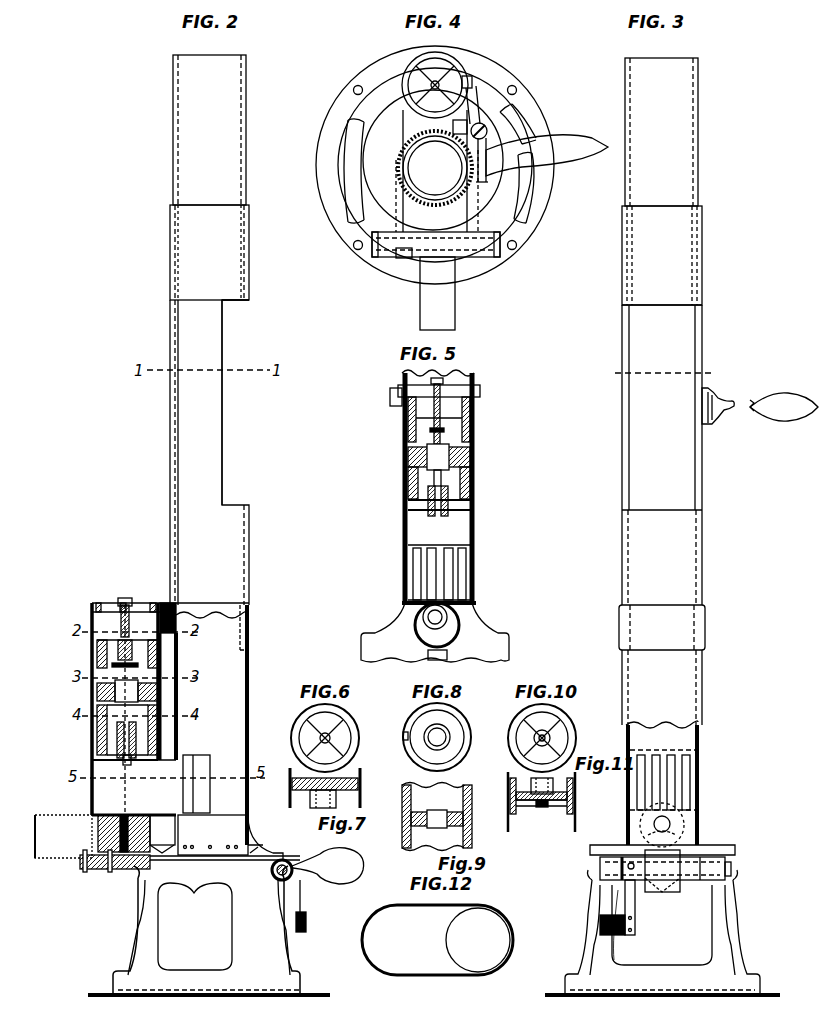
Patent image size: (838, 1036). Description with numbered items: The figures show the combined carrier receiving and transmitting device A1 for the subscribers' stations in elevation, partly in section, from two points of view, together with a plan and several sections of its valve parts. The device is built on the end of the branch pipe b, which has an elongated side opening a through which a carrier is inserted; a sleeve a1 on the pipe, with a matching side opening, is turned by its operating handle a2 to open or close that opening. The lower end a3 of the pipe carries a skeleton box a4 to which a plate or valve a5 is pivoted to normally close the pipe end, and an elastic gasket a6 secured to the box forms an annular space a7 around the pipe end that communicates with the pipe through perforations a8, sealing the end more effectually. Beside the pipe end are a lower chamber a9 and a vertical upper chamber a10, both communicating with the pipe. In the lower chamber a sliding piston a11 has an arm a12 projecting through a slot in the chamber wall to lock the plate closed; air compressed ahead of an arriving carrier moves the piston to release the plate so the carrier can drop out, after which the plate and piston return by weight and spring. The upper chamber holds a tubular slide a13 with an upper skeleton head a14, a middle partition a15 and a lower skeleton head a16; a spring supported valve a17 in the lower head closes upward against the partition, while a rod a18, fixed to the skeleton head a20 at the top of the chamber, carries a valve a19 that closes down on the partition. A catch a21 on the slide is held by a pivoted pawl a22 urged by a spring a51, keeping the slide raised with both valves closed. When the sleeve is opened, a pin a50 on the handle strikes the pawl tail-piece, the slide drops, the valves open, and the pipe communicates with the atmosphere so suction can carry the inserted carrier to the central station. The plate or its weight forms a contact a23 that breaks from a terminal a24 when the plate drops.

In FIG. 2, the elongated side opening a is at (233, 402).
In FIG. 4, the elongated side opening a is at (415, 203).
In FIG. 3, the elongated side opening a is at (663, 515).
In FIG. 2, the sleeve a1 is at (250, 300).
In FIG. 4, the sleeve a1 is at (392, 143).
In FIG. 3, the sleeve a1 is at (664, 302).
In FIG. 4, the operating handle a2 is at (572, 162).
In FIG. 3, the operating handle a2 is at (760, 394).
In FIG. 2, the lower end of pipe a3 is at (195, 845).
In FIG. 2, the skeleton box a4 is at (209, 930).
In FIG. 3, the skeleton box a4 is at (662, 932).
In FIG. 2, the plate or valve a5 is at (227, 862).
In FIG. 4, the plate or valve a5 is at (470, 262).
In FIG. 3, the plate or valve a5 is at (712, 865).
In FIG. 2, the gasket a6 is at (164, 862).
In FIG. 2, the annular space a7 is at (258, 835).
In FIG. 2, the perforations a8 is at (205, 784).
In FIG. 2, the lower chamber a9 is at (162, 834).
In FIG. 5, the lower chamber a9 is at (452, 628).
In FIG. 3, the lower chamber a9 is at (662, 825).
In FIG. 2, the upper chamber a10 is at (92, 618).
In FIG. 5, the upper chamber a10 is at (439, 488).
In FIG. 12, the upper chamber a10 is at (437, 940).
In FIG. 3, the upper chamber a10 is at (675, 790).
In FIG. 2, the sliding piston a11 is at (92, 836).
In FIG. 2, the arm a12 is at (108, 870).
In FIG. 2, the tubular slide a13 is at (91, 738).
In FIG. 4, the tubular slide a13 is at (445, 62).
In FIG. 5, the tubular slide a13 is at (460, 458).
In FIG. 6, the tubular slide a13 is at (298, 724).
In FIG. 9, the tubular slide a13 is at (418, 845).
In FIG. 2, the upper skeleton head a14 is at (88, 640).
In FIG. 6, the upper skeleton head a14 is at (330, 727).
In FIG. 7, the upper skeleton head a14 is at (345, 768).
In FIG. 2, the middle partition a15 is at (94, 690).
In FIG. 5, the middle partition a15 is at (408, 458).
In FIG. 8, the middle partition a15 is at (447, 718).
In FIG. 9, the middle partition a15 is at (437, 817).
In FIG. 2, the lower skeleton head a16 is at (93, 760).
In FIG. 5, the lower skeleton head a16 is at (410, 505).
In FIG. 10, the lower skeleton head a16 is at (568, 728).
In FIG. 11, the lower skeleton head a16 is at (555, 812).
In FIG. 2, the spring supported valve a17 is at (163, 762).
In FIG. 5, the spring supported valve a17 is at (450, 475).
In FIG. 2, the rod a18 is at (137, 621).
In FIG. 5, the rod a18 is at (445, 438).
In FIG. 2, the valve a19 is at (125, 673).
In FIG. 5, the valve a19 is at (428, 436).
In FIG. 2, the skeleton head a20 is at (96, 605).
In FIG. 5, the skeleton head a20 is at (462, 392).
In FIG. 4, the catch a21 is at (472, 82).
In FIG. 5, the catch a21 is at (440, 372).
In FIG. 4, the pivoted pawl a22 is at (474, 108).
In FIG. 2, the contact a23 is at (302, 860).
In FIG. 3, the contact a23 is at (622, 872).
In FIG. 2, the terminal a24 is at (302, 900).
In FIG. 3, the terminal a24 is at (635, 905).
In FIG. 4, the pin a50 is at (515, 230).
In FIG. 4, the spring a51 is at (487, 132).
In FIG. 2, the branch pipe b is at (211, 450).
In FIG. 4, the branch pipe b is at (435, 168).
In FIG. 3, the branch pipe b is at (662, 181).
In FIG. 2, the combined carrier receiving and transmitting device A1 is at (292, 345).
In FIG. 4, the combined carrier receiving and transmitting device A1 is at (435, 165).